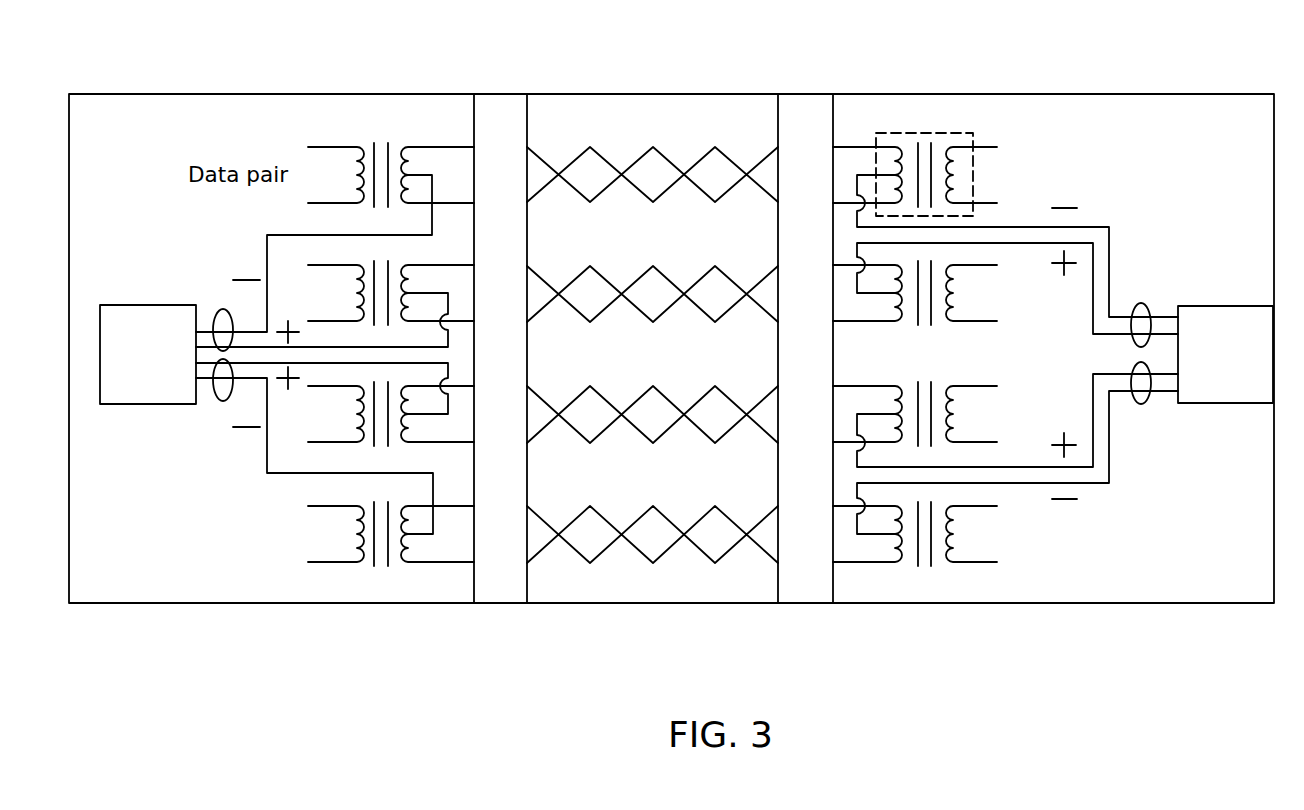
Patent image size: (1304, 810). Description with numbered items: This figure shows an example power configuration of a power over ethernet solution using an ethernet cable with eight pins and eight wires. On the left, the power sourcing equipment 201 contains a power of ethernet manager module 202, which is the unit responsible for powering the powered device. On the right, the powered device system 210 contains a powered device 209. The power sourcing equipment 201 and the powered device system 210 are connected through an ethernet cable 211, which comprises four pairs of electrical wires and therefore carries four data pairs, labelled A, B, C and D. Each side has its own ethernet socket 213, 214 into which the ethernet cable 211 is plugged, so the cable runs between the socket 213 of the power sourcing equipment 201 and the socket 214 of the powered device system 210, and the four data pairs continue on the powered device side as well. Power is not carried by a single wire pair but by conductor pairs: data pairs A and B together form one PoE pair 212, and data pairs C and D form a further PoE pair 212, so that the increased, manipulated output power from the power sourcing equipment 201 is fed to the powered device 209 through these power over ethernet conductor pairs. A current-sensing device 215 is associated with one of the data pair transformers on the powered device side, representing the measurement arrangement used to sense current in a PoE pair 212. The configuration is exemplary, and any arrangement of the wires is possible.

The power sourcing equipment 201 is at (270, 93).
The power of ethernet manager module 202 is at (170, 367).
The powered device 209 is at (1248, 367).
The powered device system 210 is at (1005, 299).
The ethernet cable 211 is at (621, 603).
The PoE pair 212 is at (223, 308).
The ethernet socket 213 is at (500, 93).
The ethernet socket 214 is at (805, 93).
The current-sensing device 215 is at (925, 133).